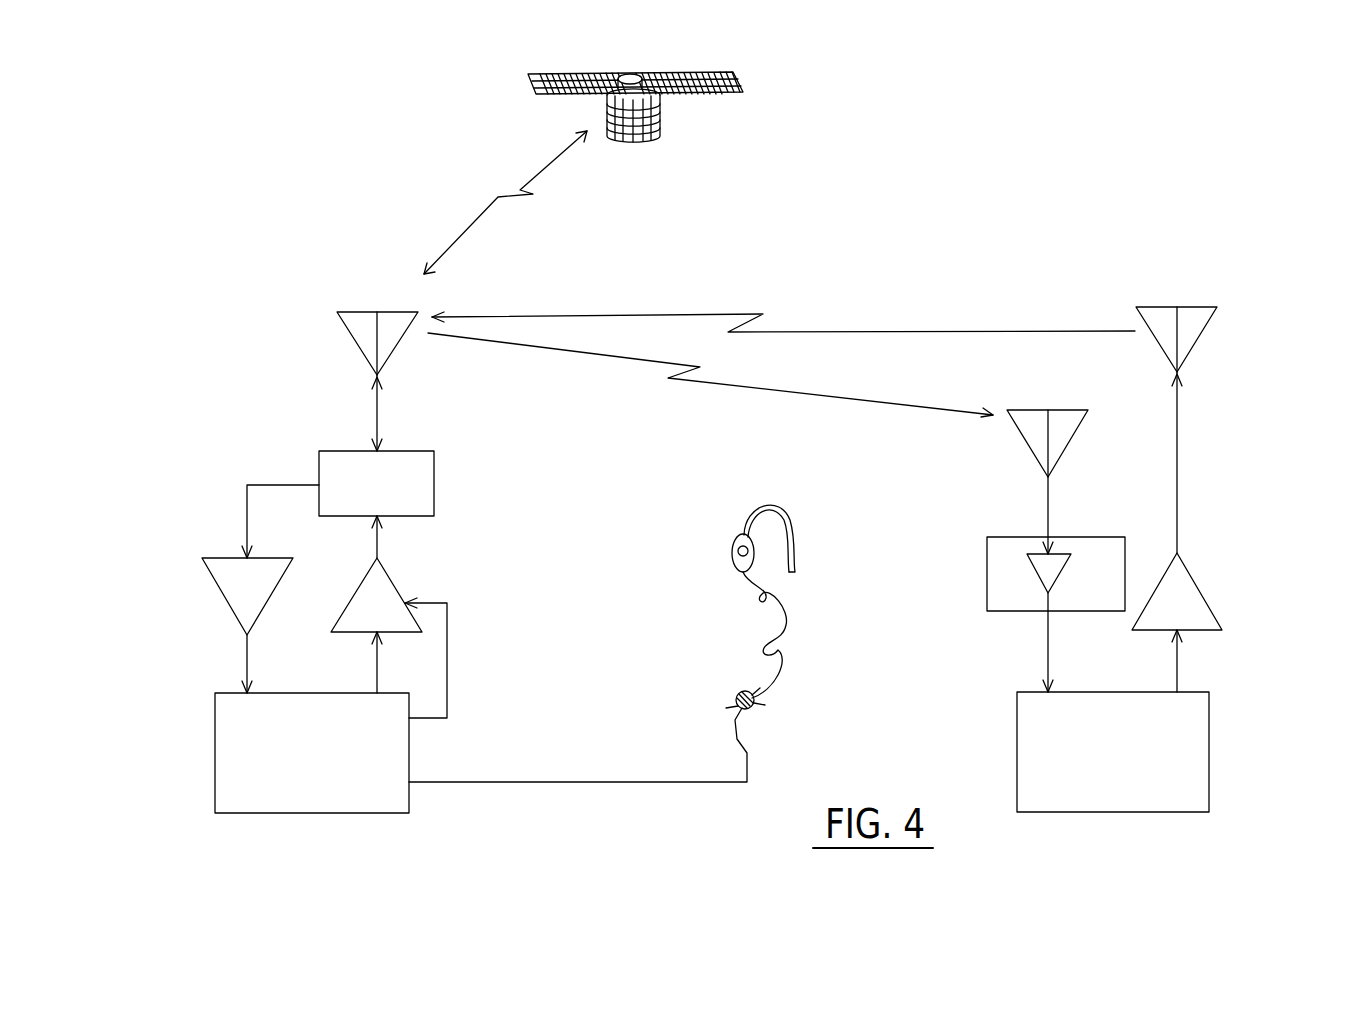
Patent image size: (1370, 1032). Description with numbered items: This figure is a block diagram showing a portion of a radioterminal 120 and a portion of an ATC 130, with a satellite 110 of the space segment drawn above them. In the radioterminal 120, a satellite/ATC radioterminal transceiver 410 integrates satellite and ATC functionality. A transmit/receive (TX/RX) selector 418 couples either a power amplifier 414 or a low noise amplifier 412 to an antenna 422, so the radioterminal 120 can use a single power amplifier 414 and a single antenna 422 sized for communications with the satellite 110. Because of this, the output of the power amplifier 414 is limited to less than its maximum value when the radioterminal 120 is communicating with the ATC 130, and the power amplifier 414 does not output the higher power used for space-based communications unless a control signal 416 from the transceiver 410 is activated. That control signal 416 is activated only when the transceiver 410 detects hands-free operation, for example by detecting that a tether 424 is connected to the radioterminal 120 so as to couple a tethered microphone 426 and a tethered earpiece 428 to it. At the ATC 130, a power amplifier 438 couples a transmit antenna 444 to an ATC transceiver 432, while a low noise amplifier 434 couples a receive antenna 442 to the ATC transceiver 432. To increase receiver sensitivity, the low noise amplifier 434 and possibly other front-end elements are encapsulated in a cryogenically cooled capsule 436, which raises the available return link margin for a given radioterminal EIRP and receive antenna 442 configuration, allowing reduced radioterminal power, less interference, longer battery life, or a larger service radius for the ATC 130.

The satellite 110 is at (557, 95).
The radioterminal 120 is at (258, 430).
The ATC 130 is at (1222, 492).
The satellite/ATC radioterminal transceiver 410 is at (215, 717).
The low noise amplifier 412 is at (262, 558).
The power amplifier 414 is at (356, 633).
The control signal 416 is at (447, 650).
The transmit/receive (TX/RX) selector 418 is at (352, 451).
The antenna 422 is at (349, 336).
The tether 424 is at (738, 743).
The tethered microphone 426 is at (738, 694).
The tethered earpiece 428 is at (734, 554).
The ATC transceiver 432 is at (1209, 762).
The low noise amplifier 434 is at (1058, 574).
The cryogenically cooled capsule 436 is at (1030, 537).
The power amplifier 438 is at (1153, 631).
The receive antenna 442 is at (1023, 436).
The transmit antenna 444 is at (1151, 333).